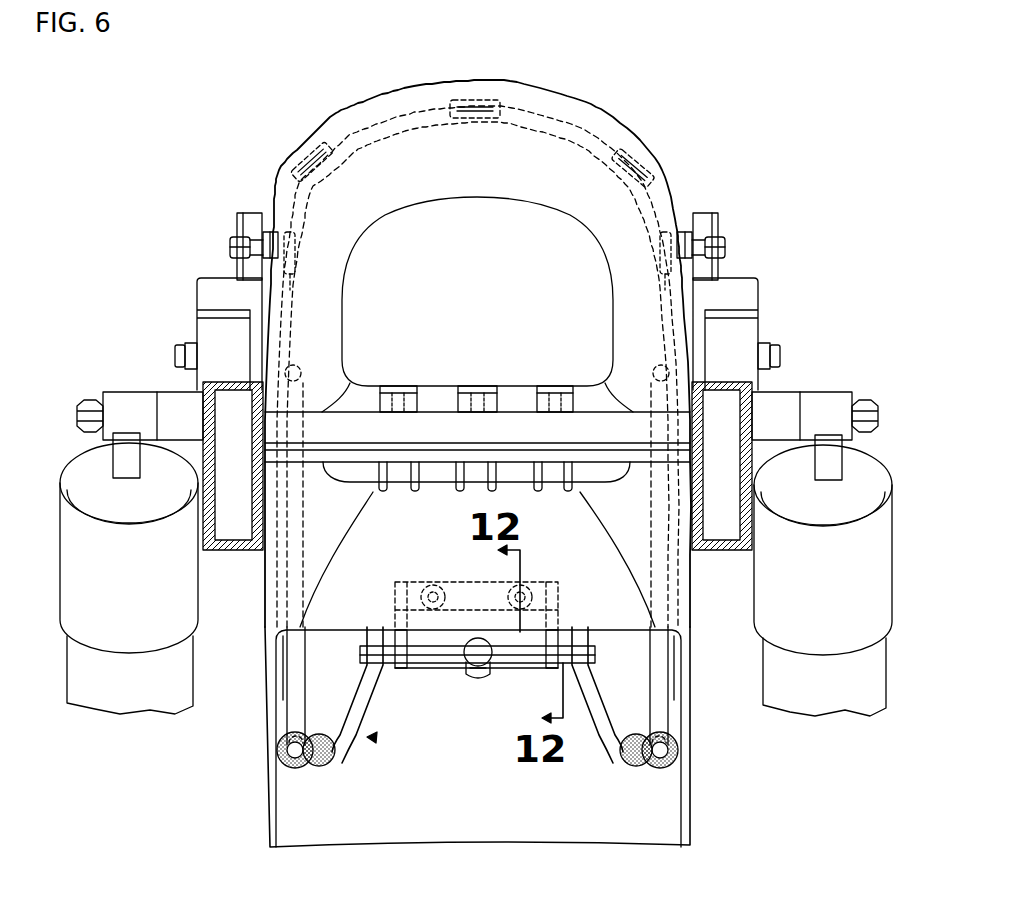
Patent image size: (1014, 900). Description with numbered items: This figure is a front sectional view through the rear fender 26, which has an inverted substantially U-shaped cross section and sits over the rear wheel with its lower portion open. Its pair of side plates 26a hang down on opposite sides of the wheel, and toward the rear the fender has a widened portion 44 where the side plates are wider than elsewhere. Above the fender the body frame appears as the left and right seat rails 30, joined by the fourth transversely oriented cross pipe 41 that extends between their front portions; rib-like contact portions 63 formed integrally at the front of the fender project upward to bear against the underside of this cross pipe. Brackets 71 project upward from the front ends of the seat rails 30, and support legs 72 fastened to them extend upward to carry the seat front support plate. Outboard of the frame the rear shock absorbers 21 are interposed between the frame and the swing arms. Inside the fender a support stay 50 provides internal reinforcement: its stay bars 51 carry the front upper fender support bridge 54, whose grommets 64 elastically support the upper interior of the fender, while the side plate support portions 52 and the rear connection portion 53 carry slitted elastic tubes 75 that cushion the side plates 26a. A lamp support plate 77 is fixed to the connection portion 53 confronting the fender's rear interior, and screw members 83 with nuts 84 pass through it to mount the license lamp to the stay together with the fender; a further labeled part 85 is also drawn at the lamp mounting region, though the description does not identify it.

The rear shock absorbers 21 is at (185, 682).
The rear fender 26 is at (440, 86).
The side plates 26a is at (263, 612).
The seat rails 30 is at (222, 343).
The fourth transversely oriented cross pipe 41 is at (435, 432).
The widened portion 44 is at (268, 807).
The support stay 50 is at (370, 737).
The stay bars 51 is at (306, 312).
The side plate support portions 52 is at (278, 590).
The rear connection portion 53 is at (385, 681).
The front upper fender support bridge 54 is at (543, 113).
The contact portions 63 is at (518, 460).
The grommets 64 is at (640, 157).
The brackets 71 is at (296, 257).
The support legs 72 is at (246, 222).
The elastic tubes 75 is at (332, 767).
The lamp support plate 77 is at (440, 665).
The screw members 83 is at (480, 675).
The nuts 84 is at (430, 650).
The flange 85 is at (578, 628).